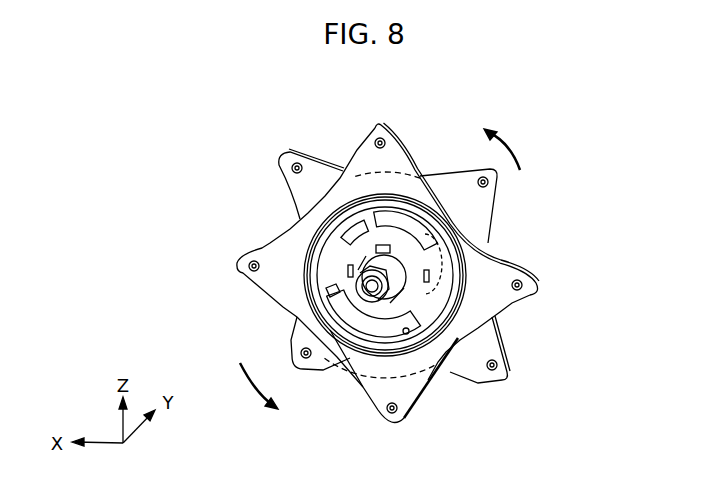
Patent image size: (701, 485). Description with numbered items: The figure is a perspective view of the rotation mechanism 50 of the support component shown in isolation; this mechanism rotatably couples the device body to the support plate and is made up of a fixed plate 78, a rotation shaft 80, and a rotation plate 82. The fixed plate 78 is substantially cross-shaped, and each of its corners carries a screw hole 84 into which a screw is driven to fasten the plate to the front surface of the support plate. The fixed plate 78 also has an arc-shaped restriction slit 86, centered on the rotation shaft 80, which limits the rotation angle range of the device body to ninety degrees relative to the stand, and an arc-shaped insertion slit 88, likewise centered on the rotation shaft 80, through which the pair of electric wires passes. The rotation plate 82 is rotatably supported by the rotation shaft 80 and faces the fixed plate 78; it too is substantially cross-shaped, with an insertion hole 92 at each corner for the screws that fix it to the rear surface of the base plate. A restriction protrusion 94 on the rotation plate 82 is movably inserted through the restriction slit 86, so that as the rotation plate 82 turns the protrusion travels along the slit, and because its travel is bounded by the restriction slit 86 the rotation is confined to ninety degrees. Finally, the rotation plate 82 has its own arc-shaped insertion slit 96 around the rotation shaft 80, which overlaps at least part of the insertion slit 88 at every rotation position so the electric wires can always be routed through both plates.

The rotation mechanism 50 is at (529, 150).
The fixed plate 78 is at (275, 248).
The rotation shaft 80 is at (371, 293).
The rotation plate 82 is at (451, 185).
The screw hole 84 is at (380, 138).
The restriction slit 86 is at (417, 334).
The insertion slit 88 is at (360, 220).
The insertion hole 92 is at (292, 167).
The restriction protrusion 94 is at (333, 289).
The insertion slit 96 is at (400, 237).